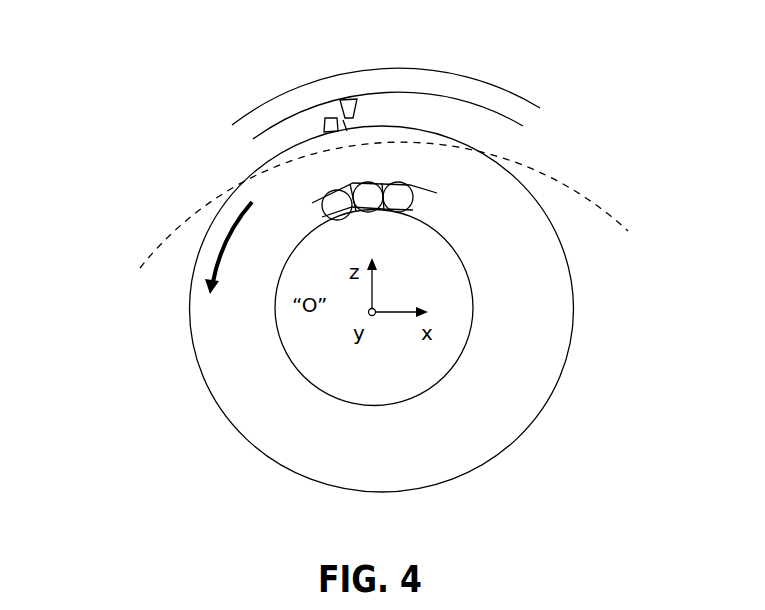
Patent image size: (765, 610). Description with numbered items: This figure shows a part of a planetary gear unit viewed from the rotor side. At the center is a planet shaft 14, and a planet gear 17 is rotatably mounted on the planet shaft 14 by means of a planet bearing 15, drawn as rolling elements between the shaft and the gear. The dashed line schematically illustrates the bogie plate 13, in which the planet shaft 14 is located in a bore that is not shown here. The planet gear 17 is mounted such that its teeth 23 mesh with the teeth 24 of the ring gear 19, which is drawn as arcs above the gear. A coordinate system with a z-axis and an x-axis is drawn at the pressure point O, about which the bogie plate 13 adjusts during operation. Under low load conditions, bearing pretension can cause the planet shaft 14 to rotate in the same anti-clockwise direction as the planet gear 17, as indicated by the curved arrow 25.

The bogie plate 13 is at (176, 229).
The planet shaft 14 is at (468, 342).
The planet bearing 15 is at (415, 197).
The planet gear 17 is at (573, 283).
The ring gear 19 is at (490, 95).
The teeth of the planet gear 23 is at (327, 120).
The teeth of the ring gear 24 is at (343, 100).
The arrow 25 is at (228, 248).